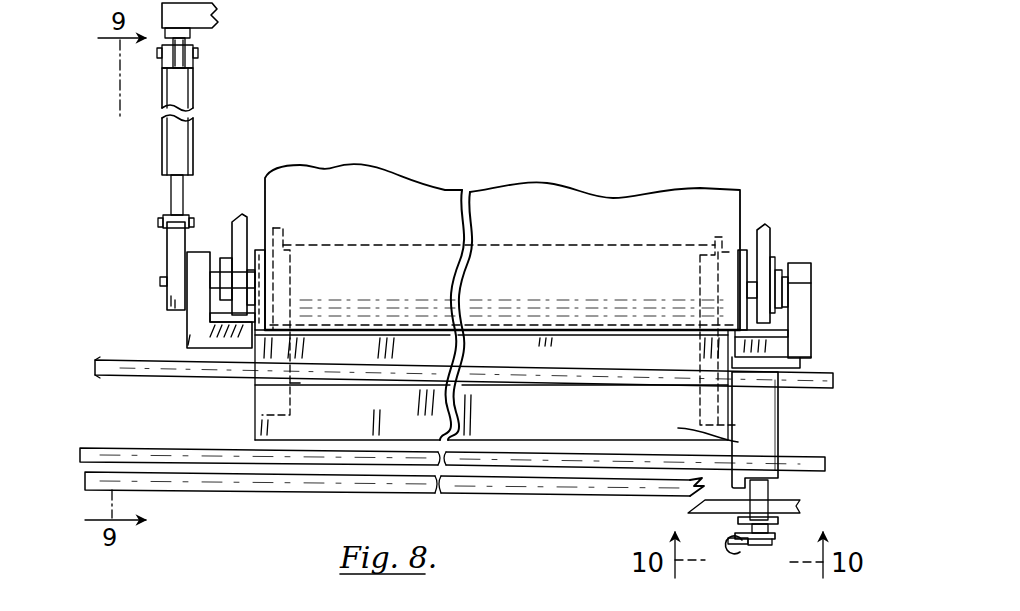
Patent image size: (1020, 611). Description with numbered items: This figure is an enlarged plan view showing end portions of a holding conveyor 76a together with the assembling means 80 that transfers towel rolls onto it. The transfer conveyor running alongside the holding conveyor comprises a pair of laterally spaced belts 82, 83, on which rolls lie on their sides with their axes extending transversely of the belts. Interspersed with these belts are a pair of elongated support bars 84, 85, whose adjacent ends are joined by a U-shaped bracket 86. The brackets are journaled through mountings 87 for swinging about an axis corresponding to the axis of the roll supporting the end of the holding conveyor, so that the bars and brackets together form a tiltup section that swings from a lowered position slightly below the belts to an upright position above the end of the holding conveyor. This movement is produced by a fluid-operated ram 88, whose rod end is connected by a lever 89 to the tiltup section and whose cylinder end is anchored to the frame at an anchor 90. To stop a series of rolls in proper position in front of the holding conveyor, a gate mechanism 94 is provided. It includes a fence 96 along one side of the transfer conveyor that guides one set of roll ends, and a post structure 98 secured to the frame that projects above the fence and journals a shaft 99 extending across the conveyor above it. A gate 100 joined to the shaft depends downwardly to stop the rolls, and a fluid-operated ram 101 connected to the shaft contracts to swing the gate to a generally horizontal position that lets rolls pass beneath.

The holding conveyor 76a is at (722, 215).
The assembling means 80 is at (444, 385).
The belt 82 is at (98, 363).
The belt 83 is at (84, 455).
The support bar 84 is at (513, 360).
The support bar 85 is at (512, 428).
The U-shaped bracket 86 is at (288, 383).
The mounting 87 is at (197, 325).
The fluid-operated ram 88 is at (150, 186).
The lever 89 is at (167, 258).
The anchor 90 is at (186, 40).
The gate mechanism 94 is at (790, 445).
The fence 96 is at (535, 490).
The post structure 98 is at (772, 522).
The shaft 99 is at (765, 539).
The gate 100 is at (680, 428).
The fluid-operated ram 101 is at (734, 556).